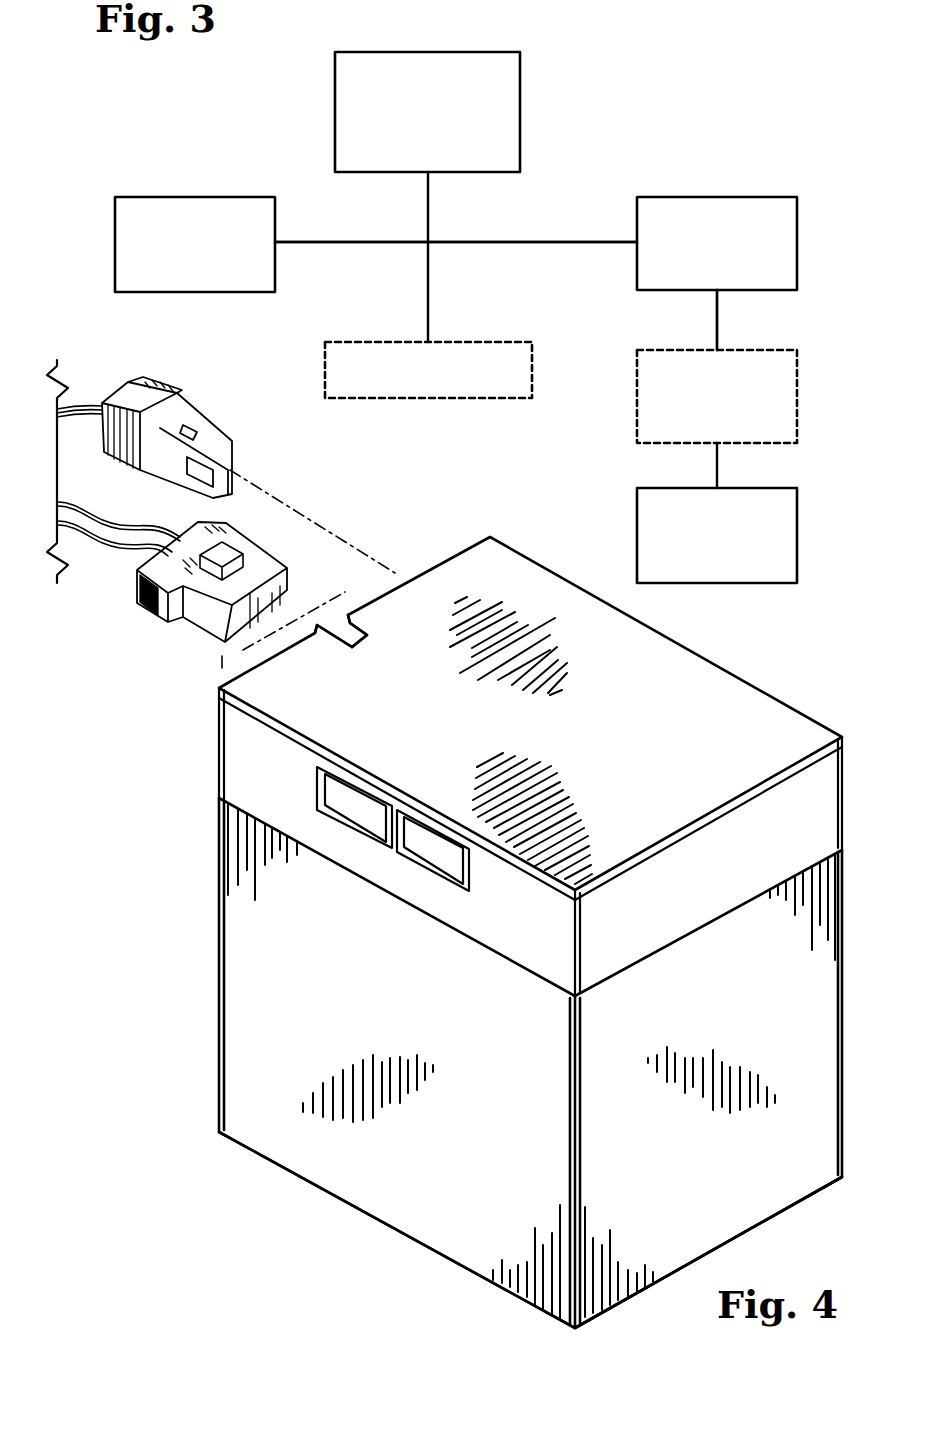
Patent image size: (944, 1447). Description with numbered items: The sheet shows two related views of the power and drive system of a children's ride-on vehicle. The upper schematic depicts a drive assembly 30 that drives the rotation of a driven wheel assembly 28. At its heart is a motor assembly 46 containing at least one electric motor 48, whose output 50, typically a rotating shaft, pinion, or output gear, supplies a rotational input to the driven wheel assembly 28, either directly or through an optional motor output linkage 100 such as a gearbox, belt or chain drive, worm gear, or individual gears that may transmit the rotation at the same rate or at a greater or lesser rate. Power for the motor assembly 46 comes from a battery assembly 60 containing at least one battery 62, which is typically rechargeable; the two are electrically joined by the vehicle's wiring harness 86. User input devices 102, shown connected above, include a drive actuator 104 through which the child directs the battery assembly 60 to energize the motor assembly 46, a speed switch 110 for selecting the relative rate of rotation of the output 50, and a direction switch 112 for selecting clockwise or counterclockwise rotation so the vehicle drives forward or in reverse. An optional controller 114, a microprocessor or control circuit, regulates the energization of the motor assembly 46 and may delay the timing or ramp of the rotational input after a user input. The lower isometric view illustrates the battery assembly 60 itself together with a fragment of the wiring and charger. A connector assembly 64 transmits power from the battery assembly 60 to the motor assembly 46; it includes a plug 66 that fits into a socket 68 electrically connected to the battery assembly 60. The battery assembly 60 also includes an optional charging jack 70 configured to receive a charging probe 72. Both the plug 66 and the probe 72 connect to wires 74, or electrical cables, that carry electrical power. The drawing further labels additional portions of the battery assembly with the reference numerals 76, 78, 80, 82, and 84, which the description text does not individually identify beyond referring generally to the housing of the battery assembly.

In FIG. 3, the driven wheel assembly 28 is at (748, 488).
In FIG. 3, the drive assembly 30 is at (722, 110).
In FIG. 3, the motor assembly 46 is at (746, 194).
In FIG. 3, the electric motor 48 is at (797, 257).
In FIG. 3, the output 50 is at (717, 336).
In FIG. 3, the battery assembly 60 is at (224, 194).
In FIG. 4, the battery assembly 60 is at (501, 932).
In FIG. 3, the battery 62 is at (152, 197).
In FIG. 4, the battery 62 is at (218, 904).
In FIG. 4, the connector assembly 64 is at (221, 554).
In FIG. 4, the plug 66 is at (163, 633).
In FIG. 4, the socket 68 is at (341, 610).
In FIG. 4, the charging jack 70 is at (324, 625).
In FIG. 4, the charging probe 72 is at (172, 372).
In FIG. 4, the wires 74 is at (74, 420).
In FIG. 4, the battery housing 76 is at (530, 766).
In FIG. 4, the side walls 78 is at (340, 1011).
In FIG. 4, the bottom wall 80 is at (758, 1183).
In FIG. 4, the top wall 82 is at (781, 718).
In FIG. 4, the bottom edge 84 is at (710, 1215).
In FIG. 3, the wiring harness 86 is at (546, 242).
In FIG. 3, the motor output linkage 100 is at (748, 350).
In FIG. 3, the user input devices 102 is at (492, 48).
In FIG. 3, the drive actuator 104 is at (340, 52).
In FIG. 3, the speed switch 110 is at (396, 52).
In FIG. 3, the direction switch 112 is at (451, 52).
In FIG. 3, the controller 114 is at (478, 342).